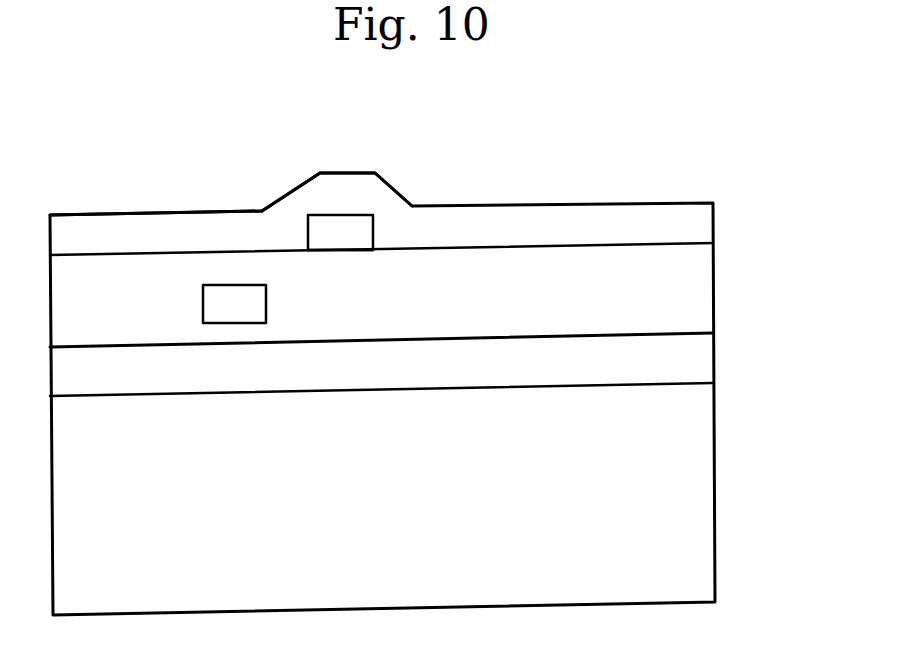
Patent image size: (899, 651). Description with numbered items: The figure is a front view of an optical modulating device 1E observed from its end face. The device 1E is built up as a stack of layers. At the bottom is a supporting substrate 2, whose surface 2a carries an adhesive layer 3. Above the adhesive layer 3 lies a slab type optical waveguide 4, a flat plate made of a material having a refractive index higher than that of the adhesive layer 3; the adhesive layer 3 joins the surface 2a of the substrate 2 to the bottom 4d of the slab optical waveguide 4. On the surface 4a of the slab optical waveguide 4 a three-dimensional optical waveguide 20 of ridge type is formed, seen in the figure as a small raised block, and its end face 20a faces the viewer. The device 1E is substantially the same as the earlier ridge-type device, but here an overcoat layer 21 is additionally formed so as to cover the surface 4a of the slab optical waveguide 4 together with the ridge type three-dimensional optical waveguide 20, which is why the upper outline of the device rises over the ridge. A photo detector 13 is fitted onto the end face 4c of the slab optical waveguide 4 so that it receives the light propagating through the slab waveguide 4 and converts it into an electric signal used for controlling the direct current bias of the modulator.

The optical modulating device 1E is at (750, 223).
The supporting substrate 2 is at (685, 492).
The surface of the substrate 2a is at (616, 380).
The adhesive layer 3 is at (685, 370).
The slab type optical waveguide 4 is at (620, 243).
The surface of the slab optical waveguide 4a is at (482, 245).
The end face of the slab optical waveguide 4c is at (695, 312).
The bottom of the waveguide 4d is at (432, 338).
The photo detector 13 is at (222, 297).
The three-dimensional optical waveguide of ridge type 20 is at (317, 202).
The end face of the waveguide 20a is at (337, 250).
The overcoat layer 21 is at (97, 233).